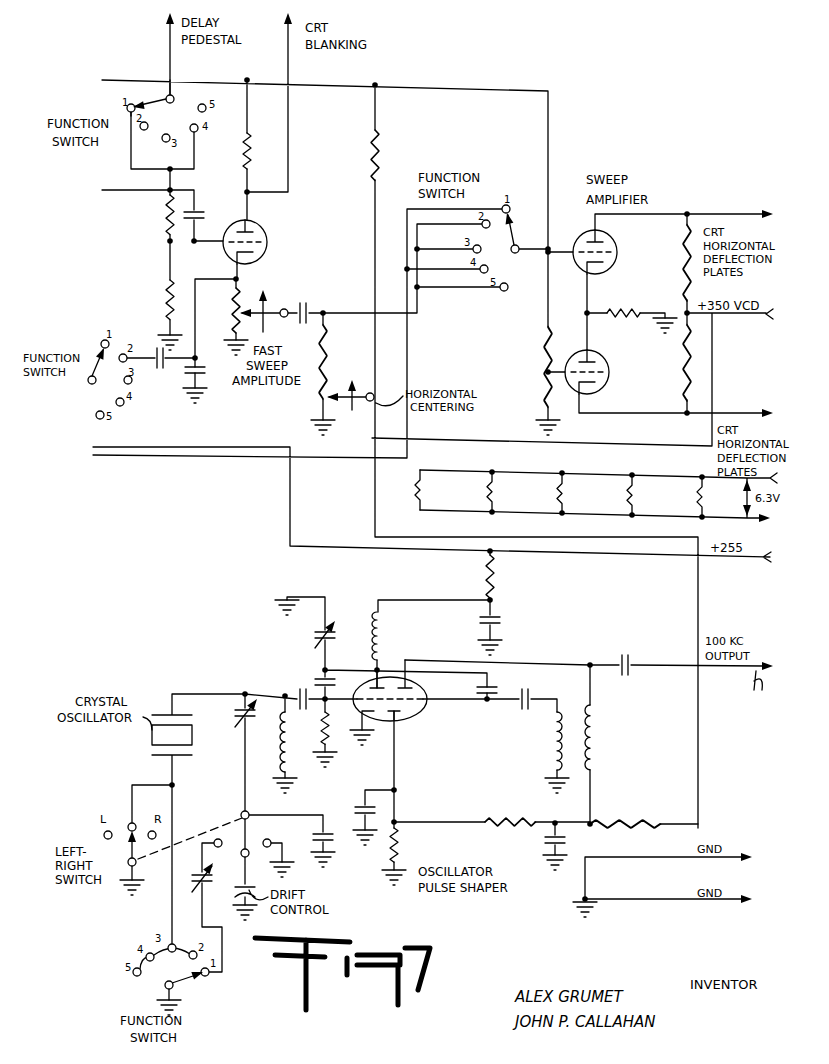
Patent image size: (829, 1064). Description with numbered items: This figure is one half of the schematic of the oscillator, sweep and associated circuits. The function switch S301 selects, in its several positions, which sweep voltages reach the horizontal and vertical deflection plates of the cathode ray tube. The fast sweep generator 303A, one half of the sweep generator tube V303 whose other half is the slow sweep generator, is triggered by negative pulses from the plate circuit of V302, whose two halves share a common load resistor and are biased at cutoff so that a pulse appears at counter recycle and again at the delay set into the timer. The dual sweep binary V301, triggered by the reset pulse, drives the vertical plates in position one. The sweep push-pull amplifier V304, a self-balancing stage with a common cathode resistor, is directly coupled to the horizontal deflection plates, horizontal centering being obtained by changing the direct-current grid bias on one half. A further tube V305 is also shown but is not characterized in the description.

The function switch S301 is at (303, 547).
The fast sweep generator 303A is at (288, 237).
The sweep push-pull amplifier V304 is at (619, 374).
The crystal oscillator tube V305 is at (410, 728).
The dual sweep binary V301 is at (438, 490).
The pulse mixing tube V302 is at (510, 492).
The sweep generator tube V303 is at (580, 493).